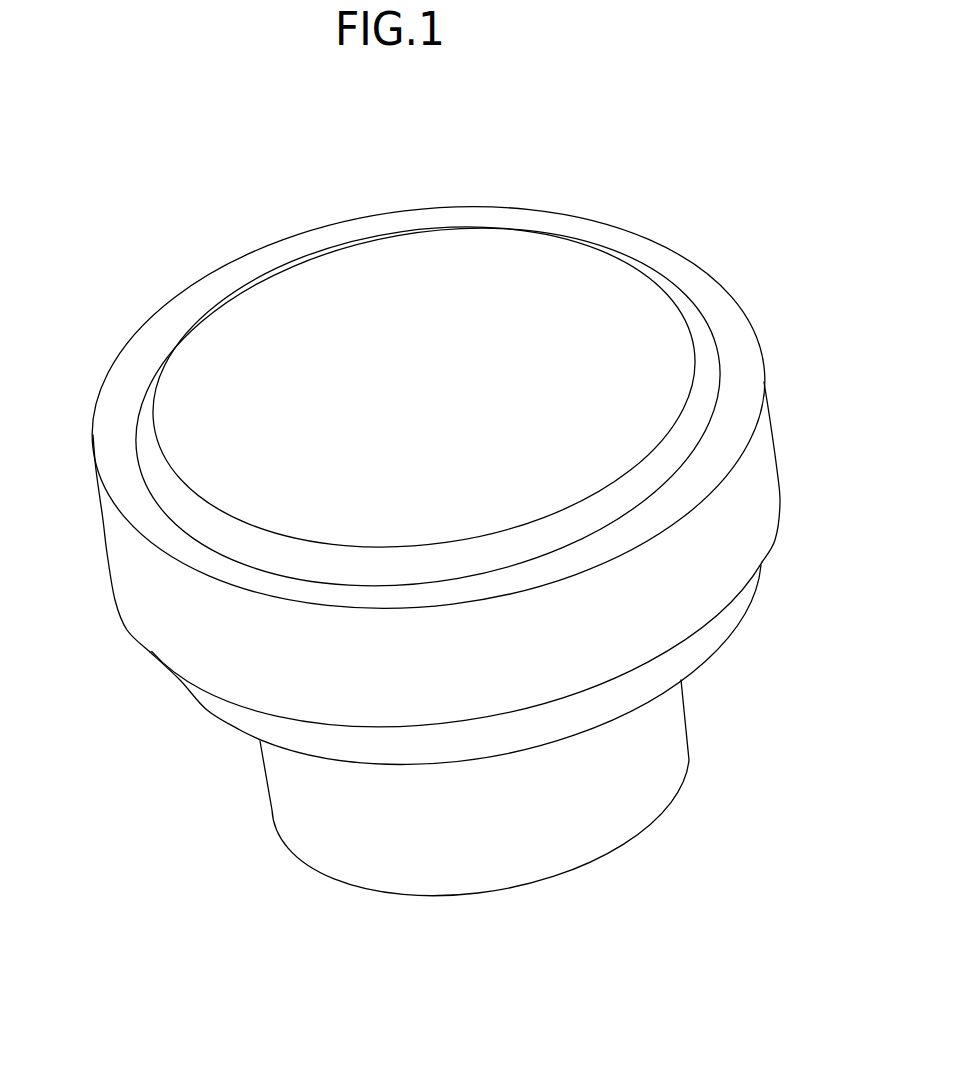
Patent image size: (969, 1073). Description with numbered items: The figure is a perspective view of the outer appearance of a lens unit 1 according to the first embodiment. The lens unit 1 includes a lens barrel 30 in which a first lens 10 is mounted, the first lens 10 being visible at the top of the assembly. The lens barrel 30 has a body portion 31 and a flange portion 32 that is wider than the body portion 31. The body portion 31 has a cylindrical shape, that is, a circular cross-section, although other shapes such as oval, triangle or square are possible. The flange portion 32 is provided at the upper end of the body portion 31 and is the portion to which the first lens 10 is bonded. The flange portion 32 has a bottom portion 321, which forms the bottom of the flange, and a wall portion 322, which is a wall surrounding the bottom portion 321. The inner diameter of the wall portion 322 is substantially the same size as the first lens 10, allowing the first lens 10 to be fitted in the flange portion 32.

The lens unit 1 is at (637, 161).
The first lens 10 is at (400, 277).
The lens barrel 30 is at (146, 289).
The body portion 31 is at (283, 807).
The flange portion 32 is at (97, 554).
The bottom portion 321 is at (217, 710).
The wall portion 322 is at (137, 615).